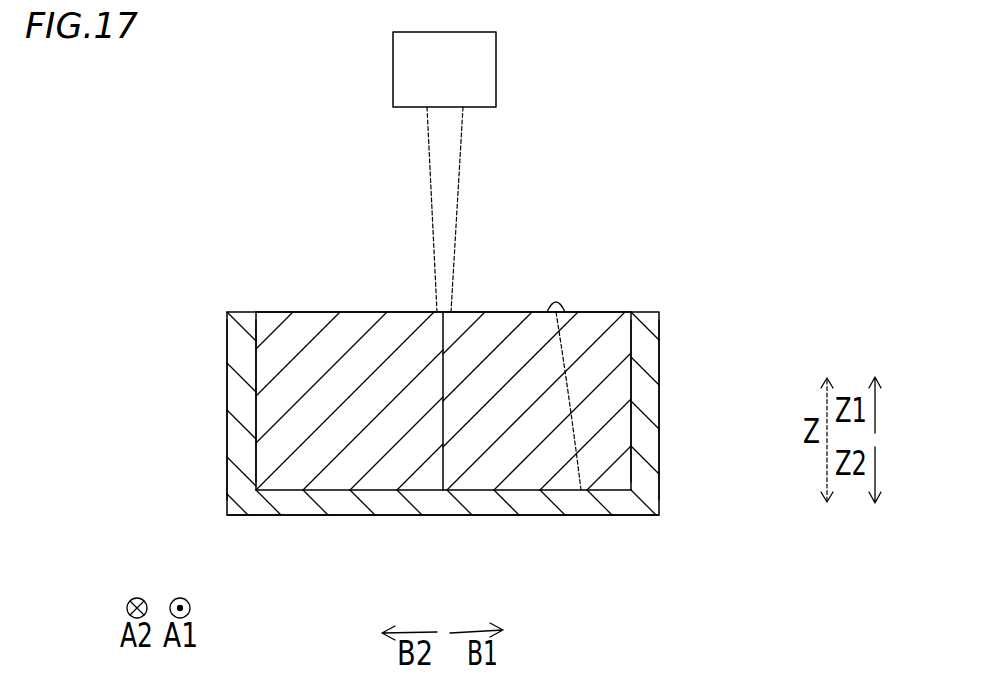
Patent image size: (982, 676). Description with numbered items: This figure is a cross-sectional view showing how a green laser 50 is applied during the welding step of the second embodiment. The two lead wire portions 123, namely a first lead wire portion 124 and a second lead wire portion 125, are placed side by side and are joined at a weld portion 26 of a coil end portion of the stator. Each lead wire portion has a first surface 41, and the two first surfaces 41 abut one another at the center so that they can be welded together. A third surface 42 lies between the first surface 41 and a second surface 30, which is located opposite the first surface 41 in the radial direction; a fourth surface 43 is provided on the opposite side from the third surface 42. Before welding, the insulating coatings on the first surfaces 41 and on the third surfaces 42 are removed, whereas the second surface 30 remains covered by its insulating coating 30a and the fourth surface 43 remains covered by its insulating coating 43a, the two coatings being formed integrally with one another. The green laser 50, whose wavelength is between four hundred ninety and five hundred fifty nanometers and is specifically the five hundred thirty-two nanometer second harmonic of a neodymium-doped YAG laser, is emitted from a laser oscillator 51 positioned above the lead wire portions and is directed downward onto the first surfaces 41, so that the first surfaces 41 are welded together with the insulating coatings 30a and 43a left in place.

The laser oscillator 51 is at (496, 70).
The green laser 50 is at (462, 178).
The second surface 30 is at (256, 365).
The insulating coating 30a is at (232, 457).
The lead wire portions 123 is at (470, 402).
The first lead wire portion 124 is at (660, 370).
The second lead wire portion 125 is at (227, 393).
The fourth surface 43 is at (302, 500).
The insulating coating 43a is at (347, 502).
The third surface 42 is at (392, 312).
The first surface 41 is at (466, 345).
The weld portion 26 is at (450, 370).